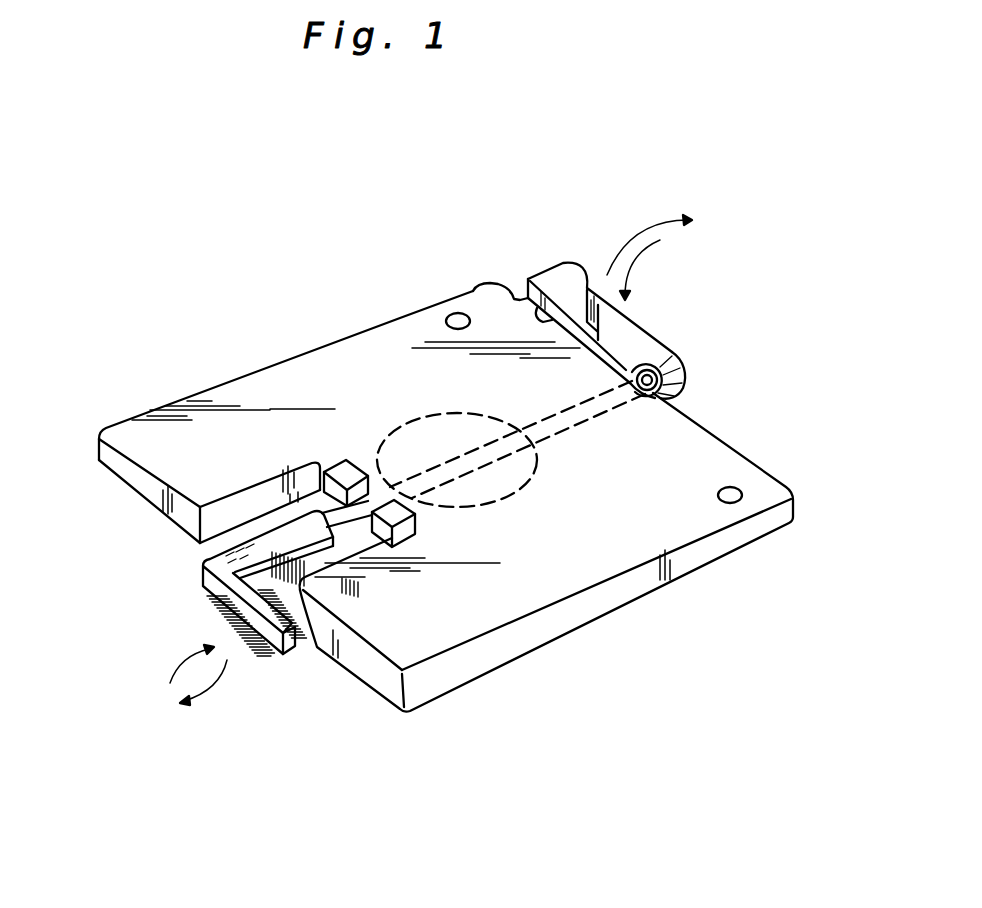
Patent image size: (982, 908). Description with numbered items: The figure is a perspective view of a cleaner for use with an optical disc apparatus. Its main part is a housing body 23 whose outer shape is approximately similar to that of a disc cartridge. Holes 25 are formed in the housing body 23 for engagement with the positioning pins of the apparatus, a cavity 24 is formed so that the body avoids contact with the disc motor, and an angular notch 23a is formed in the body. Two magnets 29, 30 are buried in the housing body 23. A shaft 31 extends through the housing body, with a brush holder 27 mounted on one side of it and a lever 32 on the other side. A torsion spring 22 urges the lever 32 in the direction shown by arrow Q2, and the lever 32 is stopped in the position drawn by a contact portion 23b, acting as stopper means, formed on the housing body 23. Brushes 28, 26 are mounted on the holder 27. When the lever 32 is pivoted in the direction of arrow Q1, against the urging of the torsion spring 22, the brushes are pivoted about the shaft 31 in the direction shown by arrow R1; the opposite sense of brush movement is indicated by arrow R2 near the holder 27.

The torsion spring 22 is at (672, 357).
The housing body 23 is at (690, 480).
The angular notch 23a is at (213, 547).
The contact portion 23b is at (516, 300).
The cavity 24 is at (504, 505).
The holes 25 is at (459, 314).
The brush 26 is at (298, 653).
The brush holder 27 is at (203, 582).
The brush 28 is at (317, 647).
The magnet 29 is at (353, 464).
The magnet 30 is at (398, 502).
The shaft 31 is at (608, 400).
The lever 32 is at (633, 330).
The lever pivoting direction Q1 is at (649, 225).
The spring urging direction Q2 is at (660, 270).
The brush pivoting direction R1 is at (210, 700).
The pivot direction arrow R2 is at (178, 664).